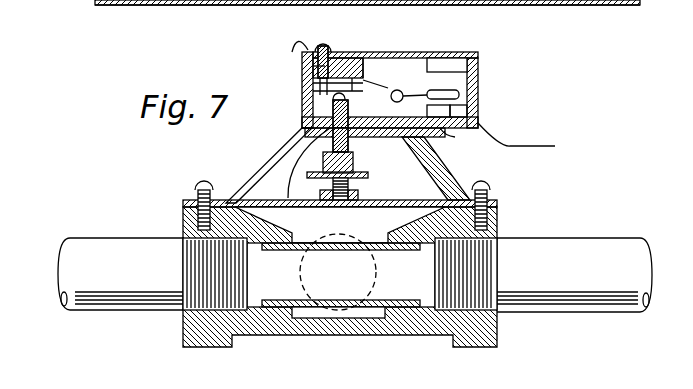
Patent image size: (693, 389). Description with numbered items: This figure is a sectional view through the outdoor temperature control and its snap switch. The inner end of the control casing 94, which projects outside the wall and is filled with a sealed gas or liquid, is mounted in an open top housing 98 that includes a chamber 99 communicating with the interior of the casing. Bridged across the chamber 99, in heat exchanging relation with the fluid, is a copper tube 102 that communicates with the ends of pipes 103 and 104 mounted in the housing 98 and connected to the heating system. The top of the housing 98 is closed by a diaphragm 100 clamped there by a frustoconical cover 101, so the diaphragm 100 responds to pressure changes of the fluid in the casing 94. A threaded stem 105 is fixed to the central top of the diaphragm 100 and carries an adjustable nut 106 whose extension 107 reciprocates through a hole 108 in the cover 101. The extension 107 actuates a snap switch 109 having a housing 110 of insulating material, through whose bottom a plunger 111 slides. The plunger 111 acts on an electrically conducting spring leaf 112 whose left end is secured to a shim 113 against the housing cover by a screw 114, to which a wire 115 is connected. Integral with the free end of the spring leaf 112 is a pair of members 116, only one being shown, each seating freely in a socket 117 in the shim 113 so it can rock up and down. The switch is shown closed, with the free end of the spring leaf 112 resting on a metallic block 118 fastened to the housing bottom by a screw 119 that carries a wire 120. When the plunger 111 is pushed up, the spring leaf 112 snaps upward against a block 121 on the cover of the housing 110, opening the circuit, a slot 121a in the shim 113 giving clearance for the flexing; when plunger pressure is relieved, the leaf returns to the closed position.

The control casing 94 is at (342, 310).
The open top housing 98 is at (493, 216).
The chamber 99 is at (285, 222).
The diaphragm 100 is at (432, 176).
The frustoconical cover 101 is at (246, 176).
The tube 102 is at (368, 245).
The pipe 103 is at (122, 224).
The pipe 104 is at (592, 245).
The threaded stem 105 is at (352, 176).
The nut 106 is at (355, 162).
The extension 107 is at (296, 165).
The hole 108 is at (305, 130).
The snap switch 109 is at (486, 82).
The housing 110 is at (478, 101).
The plunger 111 is at (305, 107).
The spring leaf 112 is at (347, 100).
The shim 113 is at (345, 58).
The screw 114 is at (343, 29).
The wire 115 is at (291, 50).
The member 116 is at (395, 78).
The socket 117 is at (368, 56).
The metallic block 118 is at (458, 110).
The screw 119 is at (443, 132).
The wire 120 is at (532, 138).
The block 121 is at (473, 62).
The slot 121a is at (308, 82).